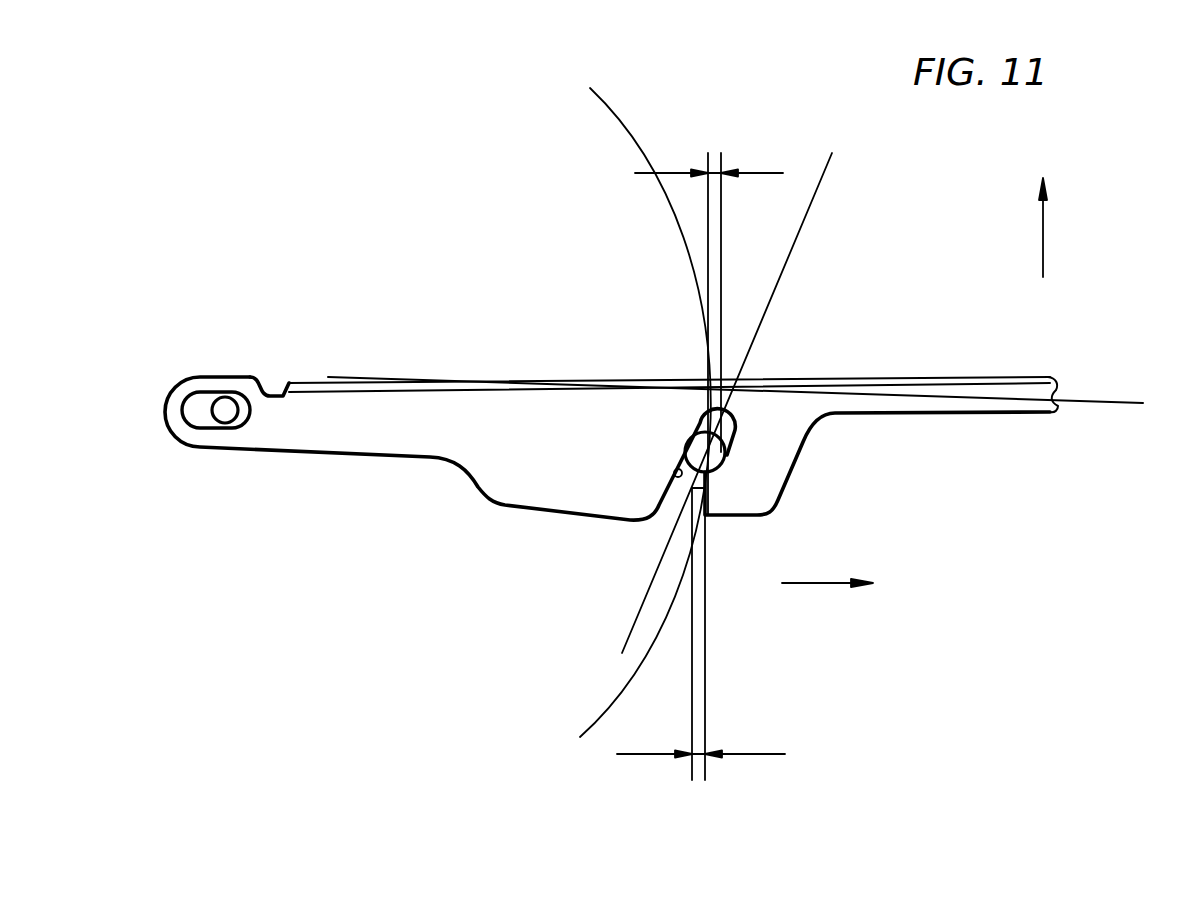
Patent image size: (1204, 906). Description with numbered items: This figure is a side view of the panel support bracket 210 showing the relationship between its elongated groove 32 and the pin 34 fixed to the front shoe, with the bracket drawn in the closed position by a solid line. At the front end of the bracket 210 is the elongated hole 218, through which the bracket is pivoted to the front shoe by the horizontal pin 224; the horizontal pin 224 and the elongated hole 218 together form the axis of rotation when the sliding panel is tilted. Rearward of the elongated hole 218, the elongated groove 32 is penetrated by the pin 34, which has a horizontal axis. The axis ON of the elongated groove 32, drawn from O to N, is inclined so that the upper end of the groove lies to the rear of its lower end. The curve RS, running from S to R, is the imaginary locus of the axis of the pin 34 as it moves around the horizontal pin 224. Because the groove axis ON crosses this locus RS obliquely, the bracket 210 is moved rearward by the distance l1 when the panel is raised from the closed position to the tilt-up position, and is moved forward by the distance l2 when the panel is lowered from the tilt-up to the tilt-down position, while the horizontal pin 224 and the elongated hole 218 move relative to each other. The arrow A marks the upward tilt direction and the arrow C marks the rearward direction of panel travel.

The panel support bracket 210 is at (417, 380).
The elongated hole 218 is at (198, 420).
The horizontal pin 224 is at (225, 397).
The elongated groove 32 is at (672, 470).
The pin 34 is at (722, 450).
The locus end point S is at (640, 398).
The locus end point R is at (563, 743).
The groove axis end point O is at (735, 389).
The groove axis end point N is at (614, 668).
The rearward movement distance l1 is at (695, 757).
The forward movement distance l2 is at (717, 172).
The tilt-up direction arrow A is at (1043, 240).
The rearward sliding direction arrow C is at (818, 584).